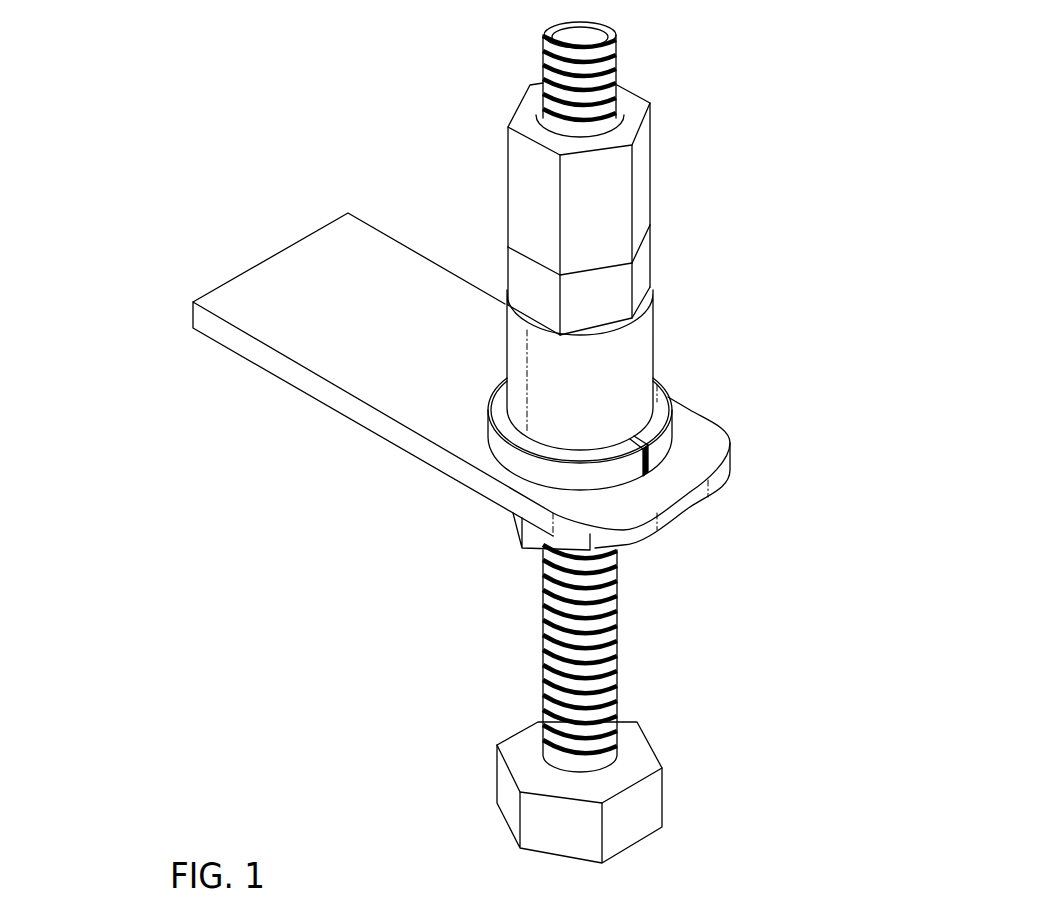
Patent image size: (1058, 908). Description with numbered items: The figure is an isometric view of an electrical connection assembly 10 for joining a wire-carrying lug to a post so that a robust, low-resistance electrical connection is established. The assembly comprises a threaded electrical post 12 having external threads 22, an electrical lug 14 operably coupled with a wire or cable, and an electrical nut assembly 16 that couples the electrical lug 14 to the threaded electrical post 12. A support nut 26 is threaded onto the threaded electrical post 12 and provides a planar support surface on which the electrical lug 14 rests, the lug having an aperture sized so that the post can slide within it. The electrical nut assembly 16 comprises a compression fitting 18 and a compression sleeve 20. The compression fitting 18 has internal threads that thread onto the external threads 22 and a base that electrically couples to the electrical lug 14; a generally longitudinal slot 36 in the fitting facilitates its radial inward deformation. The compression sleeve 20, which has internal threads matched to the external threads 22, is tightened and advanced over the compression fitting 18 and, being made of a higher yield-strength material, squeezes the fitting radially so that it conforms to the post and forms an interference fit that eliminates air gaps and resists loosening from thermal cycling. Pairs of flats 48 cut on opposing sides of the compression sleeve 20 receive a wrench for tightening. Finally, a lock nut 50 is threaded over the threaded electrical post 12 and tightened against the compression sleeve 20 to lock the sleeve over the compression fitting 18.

The electrical connection assembly 10 is at (240, 146).
The threaded electrical post 12 is at (543, 652).
The electrical lug 14 is at (265, 295).
The electrical nut assembly 16 is at (745, 188).
The compression fitting 18 is at (672, 412).
The compression sleeve 20 is at (632, 362).
The external threads 22 is at (543, 604).
The support nut 26 is at (515, 528).
The generally longitudinal slot 36 is at (650, 472).
The pairs of flats 48 is at (520, 290).
The lock nut 50 is at (637, 147).